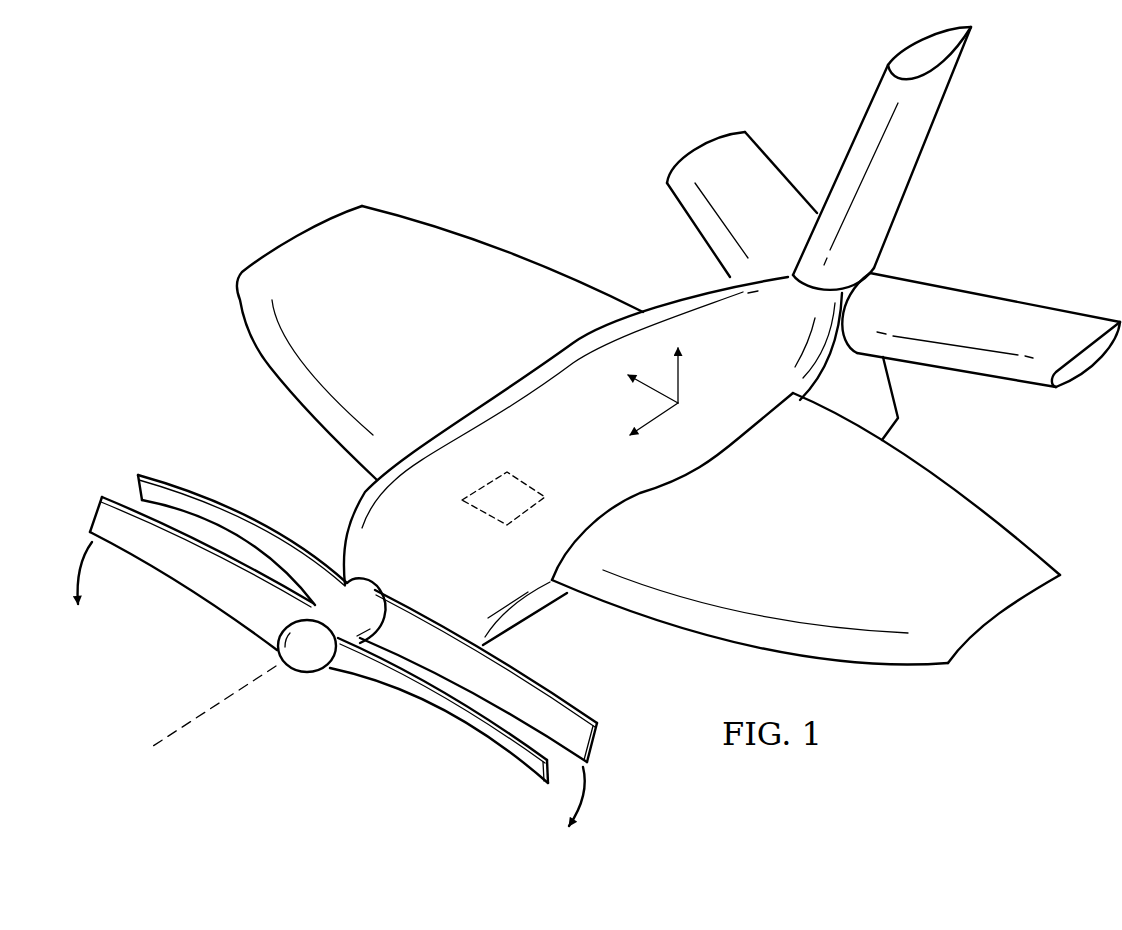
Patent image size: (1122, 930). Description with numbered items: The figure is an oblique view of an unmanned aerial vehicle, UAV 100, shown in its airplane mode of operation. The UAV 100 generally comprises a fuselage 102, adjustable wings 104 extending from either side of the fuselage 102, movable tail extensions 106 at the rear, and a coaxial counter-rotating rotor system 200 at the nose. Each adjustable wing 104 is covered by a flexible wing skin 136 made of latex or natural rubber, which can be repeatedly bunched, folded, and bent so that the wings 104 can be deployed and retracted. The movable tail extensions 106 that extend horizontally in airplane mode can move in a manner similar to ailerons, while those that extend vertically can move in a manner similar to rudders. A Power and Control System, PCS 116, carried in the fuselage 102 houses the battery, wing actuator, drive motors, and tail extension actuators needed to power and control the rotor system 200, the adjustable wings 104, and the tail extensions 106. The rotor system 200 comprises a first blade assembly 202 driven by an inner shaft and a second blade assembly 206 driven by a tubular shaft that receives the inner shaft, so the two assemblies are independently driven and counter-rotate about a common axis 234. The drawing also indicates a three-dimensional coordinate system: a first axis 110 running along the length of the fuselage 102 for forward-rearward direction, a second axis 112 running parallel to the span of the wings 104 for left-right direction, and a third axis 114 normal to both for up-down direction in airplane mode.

The UAV 100 is at (483, 156).
The fuselage 102 is at (678, 297).
The adjustable wings 104 is at (402, 211).
The movable tail extensions 106 is at (763, 148).
The first axis 110 is at (660, 420).
The second axis 112 is at (655, 385).
The third axis 114 is at (680, 380).
The Power and Control System (PCS) 116 is at (507, 472).
The flexible wing skin 136 is at (512, 270).
The coaxial counter-rotating rotor system 200 is at (337, 650).
The first blade assembly 202 is at (463, 738).
The second blade assembly 206 is at (547, 682).
The rotation axis 234 is at (192, 722).